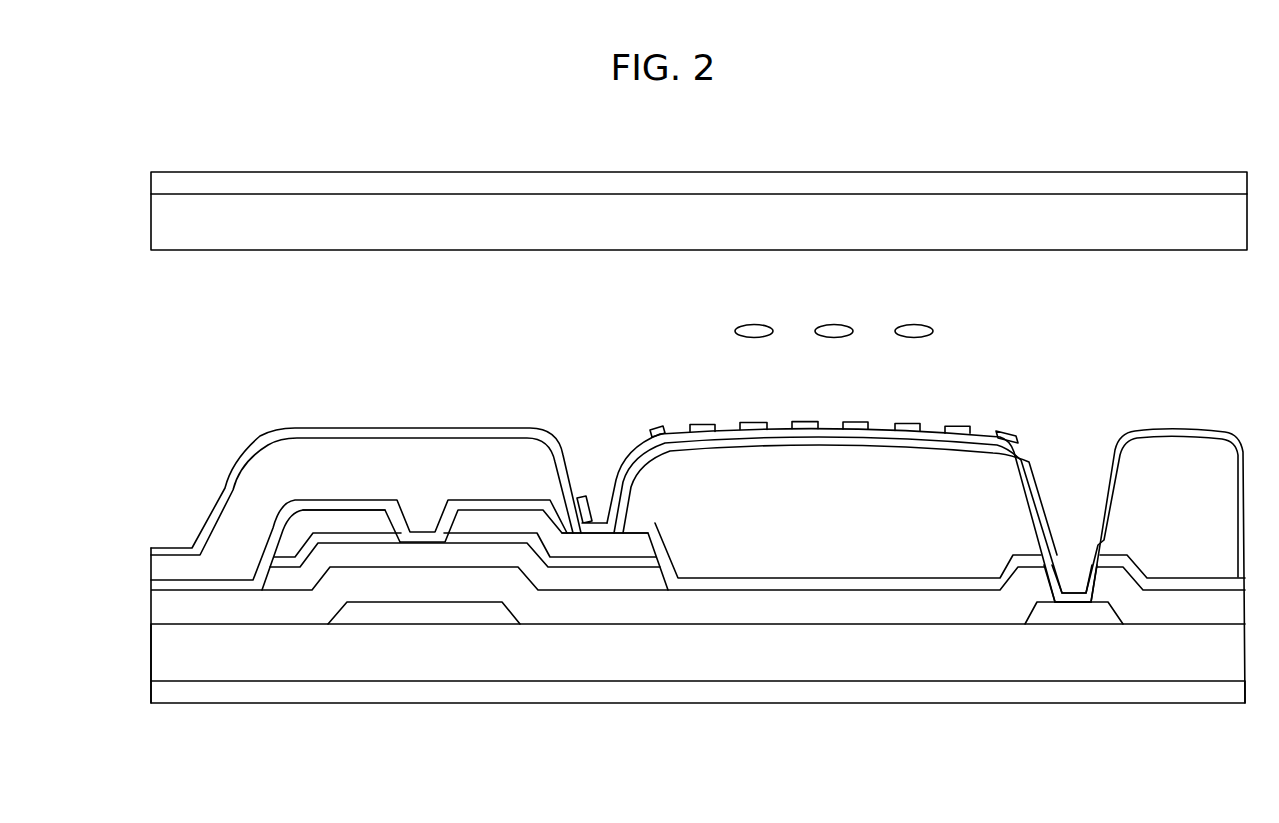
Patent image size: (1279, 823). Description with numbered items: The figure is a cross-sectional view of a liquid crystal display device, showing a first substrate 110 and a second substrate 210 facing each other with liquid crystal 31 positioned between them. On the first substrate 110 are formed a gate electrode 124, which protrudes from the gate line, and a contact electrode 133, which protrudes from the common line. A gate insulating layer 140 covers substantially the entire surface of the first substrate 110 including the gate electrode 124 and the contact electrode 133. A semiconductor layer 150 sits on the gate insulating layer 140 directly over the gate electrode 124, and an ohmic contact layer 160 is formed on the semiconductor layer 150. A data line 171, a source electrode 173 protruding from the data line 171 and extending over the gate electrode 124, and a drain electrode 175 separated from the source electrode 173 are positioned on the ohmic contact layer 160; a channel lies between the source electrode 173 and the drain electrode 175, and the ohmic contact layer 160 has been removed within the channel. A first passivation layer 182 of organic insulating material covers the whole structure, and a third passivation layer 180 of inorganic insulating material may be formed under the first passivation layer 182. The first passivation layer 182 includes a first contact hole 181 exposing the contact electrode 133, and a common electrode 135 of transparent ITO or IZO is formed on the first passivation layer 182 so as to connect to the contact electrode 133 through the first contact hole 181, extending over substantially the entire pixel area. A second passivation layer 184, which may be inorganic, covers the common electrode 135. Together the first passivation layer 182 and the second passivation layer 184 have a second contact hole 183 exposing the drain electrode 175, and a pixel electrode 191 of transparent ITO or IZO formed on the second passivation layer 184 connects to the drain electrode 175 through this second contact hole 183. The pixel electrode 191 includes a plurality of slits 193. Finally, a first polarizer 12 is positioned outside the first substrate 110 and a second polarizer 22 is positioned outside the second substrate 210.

The second polarizer 22 is at (162, 183).
The second substrate 210 is at (162, 225).
The liquid crystal 31 is at (930, 326).
The first substrate 110 is at (820, 650).
The first polarizer 12 is at (953, 690).
The gate electrode 124 is at (487, 613).
The contact electrode 133 is at (1085, 615).
The common electrode 135 is at (1058, 605).
The gate insulating layer 140 is at (878, 607).
The semiconductor layer 150 is at (428, 557).
The ohmic contact layer 160 is at (360, 538).
The data line 171 is at (293, 541).
The source electrode 173 is at (350, 520).
The drain electrode 175 is at (613, 545).
The third passivation layer 180 is at (757, 583).
The first contact hole 181 is at (1067, 600).
The first passivation layer 182 is at (162, 567).
The second contact hole 183 is at (590, 505).
The second passivation layer 184 is at (228, 480).
The pixel electrode 191 is at (650, 428).
The slits 193 is at (983, 416).